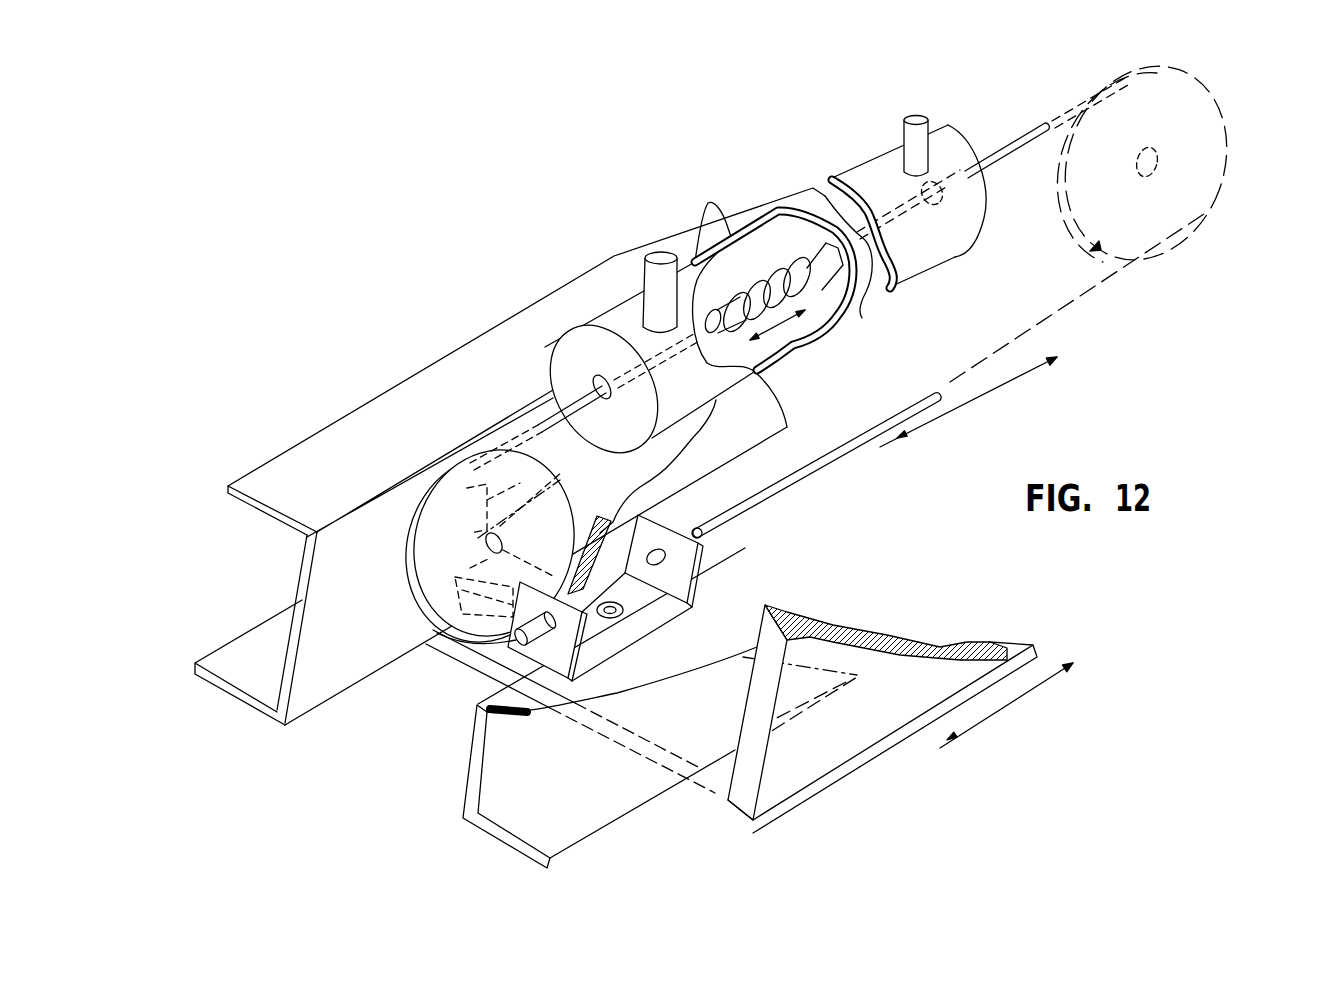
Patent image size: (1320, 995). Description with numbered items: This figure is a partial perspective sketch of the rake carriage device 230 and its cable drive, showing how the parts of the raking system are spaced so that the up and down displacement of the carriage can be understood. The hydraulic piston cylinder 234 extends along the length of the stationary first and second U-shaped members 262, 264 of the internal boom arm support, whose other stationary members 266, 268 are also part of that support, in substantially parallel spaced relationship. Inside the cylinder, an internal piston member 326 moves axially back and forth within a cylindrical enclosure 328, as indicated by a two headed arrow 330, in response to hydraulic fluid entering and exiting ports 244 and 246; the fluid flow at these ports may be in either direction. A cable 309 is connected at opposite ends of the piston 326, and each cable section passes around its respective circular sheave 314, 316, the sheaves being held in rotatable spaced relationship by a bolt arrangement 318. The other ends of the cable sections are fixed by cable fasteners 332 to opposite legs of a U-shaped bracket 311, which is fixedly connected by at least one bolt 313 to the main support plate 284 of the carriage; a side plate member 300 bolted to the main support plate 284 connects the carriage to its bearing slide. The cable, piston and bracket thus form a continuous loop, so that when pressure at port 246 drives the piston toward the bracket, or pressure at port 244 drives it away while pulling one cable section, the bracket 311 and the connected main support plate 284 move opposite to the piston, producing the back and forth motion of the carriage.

The rake carriage device 230 is at (833, 797).
The hydraulic piston cylinder 234 is at (794, 180).
The hydraulic fluid port 244 is at (650, 276).
The hydraulic fluid port 246 is at (925, 148).
The first U-shaped member 262 is at (223, 683).
The second U-shaped member 264 is at (507, 818).
The stationary member 266 is at (446, 592).
The stationary member 268 is at (497, 498).
The main support plate 284 is at (703, 793).
The side plate member 300 is at (853, 728).
The cable 309 is at (1021, 137).
The U-shaped bracket 311 is at (701, 553).
The bolt 313 is at (617, 607).
The circular sheave 314 is at (404, 563).
The circular sheave 316 is at (1208, 183).
The bolt arrangement 318 is at (502, 543).
The internal piston member 326 is at (778, 257).
The cylindrical enclosure 328 is at (962, 257).
The two headed arrow 330 is at (787, 320).
The cable fastener 332 is at (670, 560).